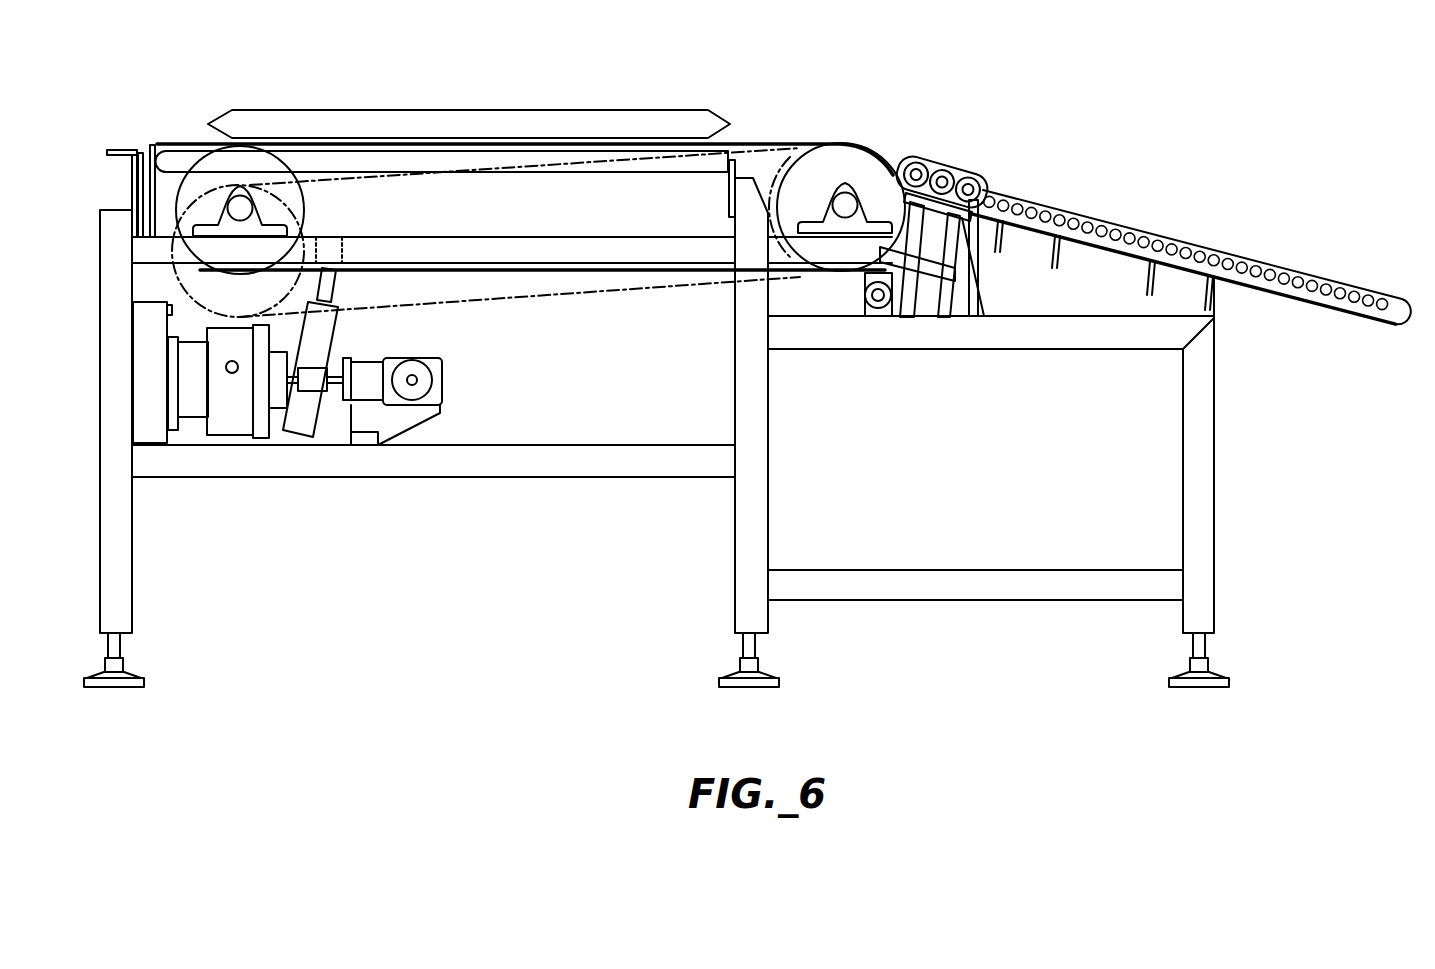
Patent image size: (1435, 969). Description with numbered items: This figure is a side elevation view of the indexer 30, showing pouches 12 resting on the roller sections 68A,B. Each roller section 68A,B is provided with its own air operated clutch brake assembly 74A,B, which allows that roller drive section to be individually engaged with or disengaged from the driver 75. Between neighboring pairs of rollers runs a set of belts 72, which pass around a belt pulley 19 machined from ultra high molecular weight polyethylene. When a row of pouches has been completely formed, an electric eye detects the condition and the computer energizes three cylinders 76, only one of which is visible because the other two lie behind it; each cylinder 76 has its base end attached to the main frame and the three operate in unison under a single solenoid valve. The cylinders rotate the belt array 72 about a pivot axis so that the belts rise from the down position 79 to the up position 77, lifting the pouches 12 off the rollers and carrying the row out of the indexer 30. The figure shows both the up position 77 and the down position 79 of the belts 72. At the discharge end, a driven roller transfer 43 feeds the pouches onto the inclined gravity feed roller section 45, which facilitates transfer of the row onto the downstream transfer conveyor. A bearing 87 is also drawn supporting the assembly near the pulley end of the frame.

The pouches 12 is at (600, 112).
The indexer 30 is at (876, 91).
The roller sections 68A,B is at (179, 150).
The up position 77 is at (178, 190).
The down position 79 is at (178, 272).
The cylinder 76 is at (318, 336).
The air operated clutch brake assembly 74A,B is at (233, 417).
The driver 75 is at (372, 388).
The belts 72 is at (346, 226).
The belt pulley 19 is at (786, 207).
The bearing 87 is at (873, 312).
The driven roller transfer 43 is at (945, 175).
The gravity feed roller section 45 is at (1110, 223).